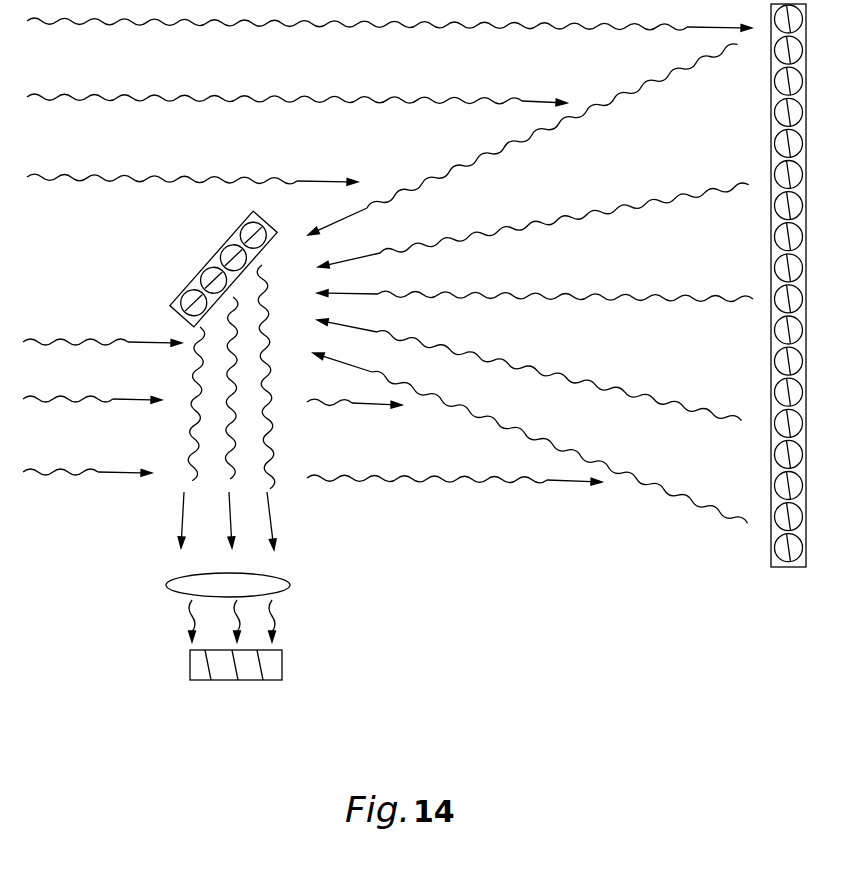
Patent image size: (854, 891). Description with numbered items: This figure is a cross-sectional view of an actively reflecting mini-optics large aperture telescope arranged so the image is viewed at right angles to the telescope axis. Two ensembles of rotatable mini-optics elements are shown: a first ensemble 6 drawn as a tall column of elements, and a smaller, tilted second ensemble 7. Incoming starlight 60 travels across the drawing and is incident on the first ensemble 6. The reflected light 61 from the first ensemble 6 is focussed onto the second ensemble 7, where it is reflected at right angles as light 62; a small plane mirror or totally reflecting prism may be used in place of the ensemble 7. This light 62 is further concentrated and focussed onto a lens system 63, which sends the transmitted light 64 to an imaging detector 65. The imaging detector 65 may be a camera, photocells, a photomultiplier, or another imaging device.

The first mini-optics ensemble 6 is at (760, 120).
The second mini-optics ensemble 7 is at (196, 258).
The starlight 60 is at (133, 103).
The reflected light 61 is at (580, 218).
The right-angle reflected light 62 is at (234, 433).
The lens system 63 is at (257, 585).
The transmitted light 64 is at (187, 624).
The imaging detector 65 is at (283, 668).